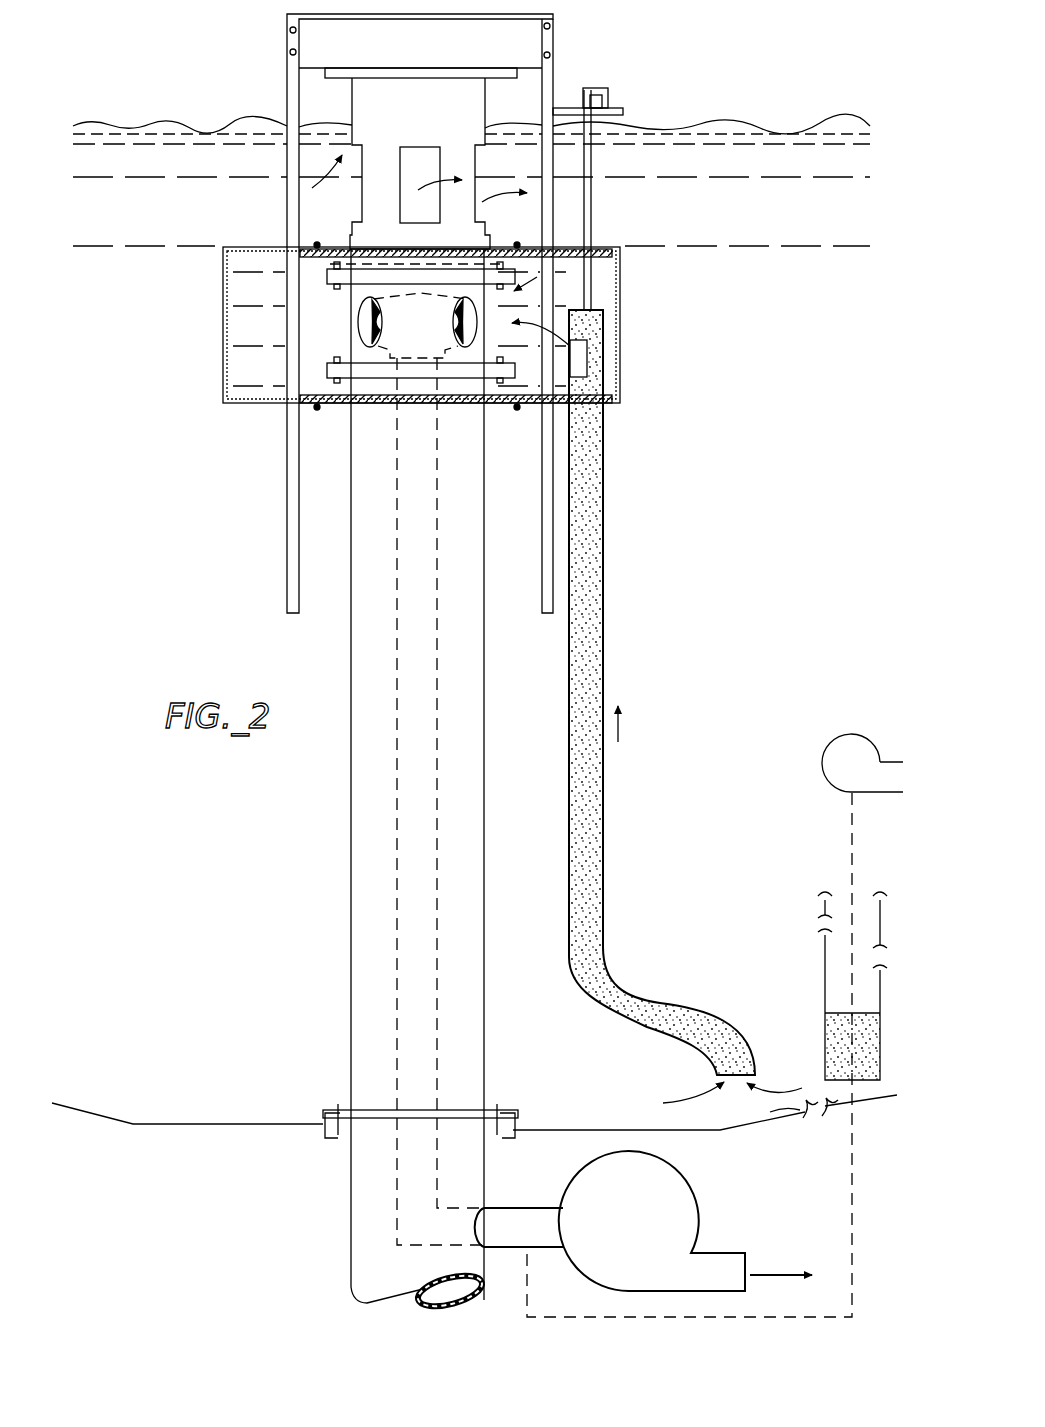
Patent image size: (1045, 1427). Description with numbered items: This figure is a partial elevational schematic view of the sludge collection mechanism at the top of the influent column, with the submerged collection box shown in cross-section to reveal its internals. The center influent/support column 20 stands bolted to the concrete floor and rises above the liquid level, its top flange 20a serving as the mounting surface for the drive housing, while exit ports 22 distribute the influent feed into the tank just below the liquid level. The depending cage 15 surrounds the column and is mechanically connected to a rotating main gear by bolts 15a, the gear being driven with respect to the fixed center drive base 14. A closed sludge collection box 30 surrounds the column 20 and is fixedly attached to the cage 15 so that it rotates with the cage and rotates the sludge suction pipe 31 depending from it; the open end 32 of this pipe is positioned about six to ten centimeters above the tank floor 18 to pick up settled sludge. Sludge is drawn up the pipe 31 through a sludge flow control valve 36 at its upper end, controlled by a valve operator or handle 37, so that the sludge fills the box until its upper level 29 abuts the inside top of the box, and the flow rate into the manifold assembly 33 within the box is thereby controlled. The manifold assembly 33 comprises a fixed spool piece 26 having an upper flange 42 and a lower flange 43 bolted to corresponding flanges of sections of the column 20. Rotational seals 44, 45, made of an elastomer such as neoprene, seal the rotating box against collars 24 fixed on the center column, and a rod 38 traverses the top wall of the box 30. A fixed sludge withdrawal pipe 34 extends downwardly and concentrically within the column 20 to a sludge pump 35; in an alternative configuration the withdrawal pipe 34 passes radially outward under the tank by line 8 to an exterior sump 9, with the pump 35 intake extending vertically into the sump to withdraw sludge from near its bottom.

The line 8 is at (848, 1133).
The exterior sump 9 is at (826, 1048).
The center drive base 14 is at (312, 17).
The cage 15 is at (556, 90).
The bolts 15a is at (556, 22).
The tank floor 18 is at (795, 1112).
The center influent/support column 20 is at (350, 903).
The top flange 20a is at (340, 68).
The exit ports 22 is at (472, 160).
The collars 24 is at (340, 247).
The spool piece 26 is at (360, 325).
The upper level of the sludge 29 is at (228, 268).
The sludge collection box 30 is at (222, 305).
The sludge suction pipe 31 is at (603, 510).
The open end 32 is at (718, 1076).
The manifold assembly 33 is at (540, 281).
The sludge withdrawal pipe 34 is at (397, 940).
The sludge pump 35 is at (836, 785).
The sludge flow control valve 36 is at (590, 362).
The valve operator or handle 37 is at (610, 97).
The rod 38 is at (592, 158).
The upper flange 42 is at (332, 268).
The lower flange 43 is at (327, 368).
The rotational seal 44 is at (510, 242).
The rotational seal 45 is at (505, 405).